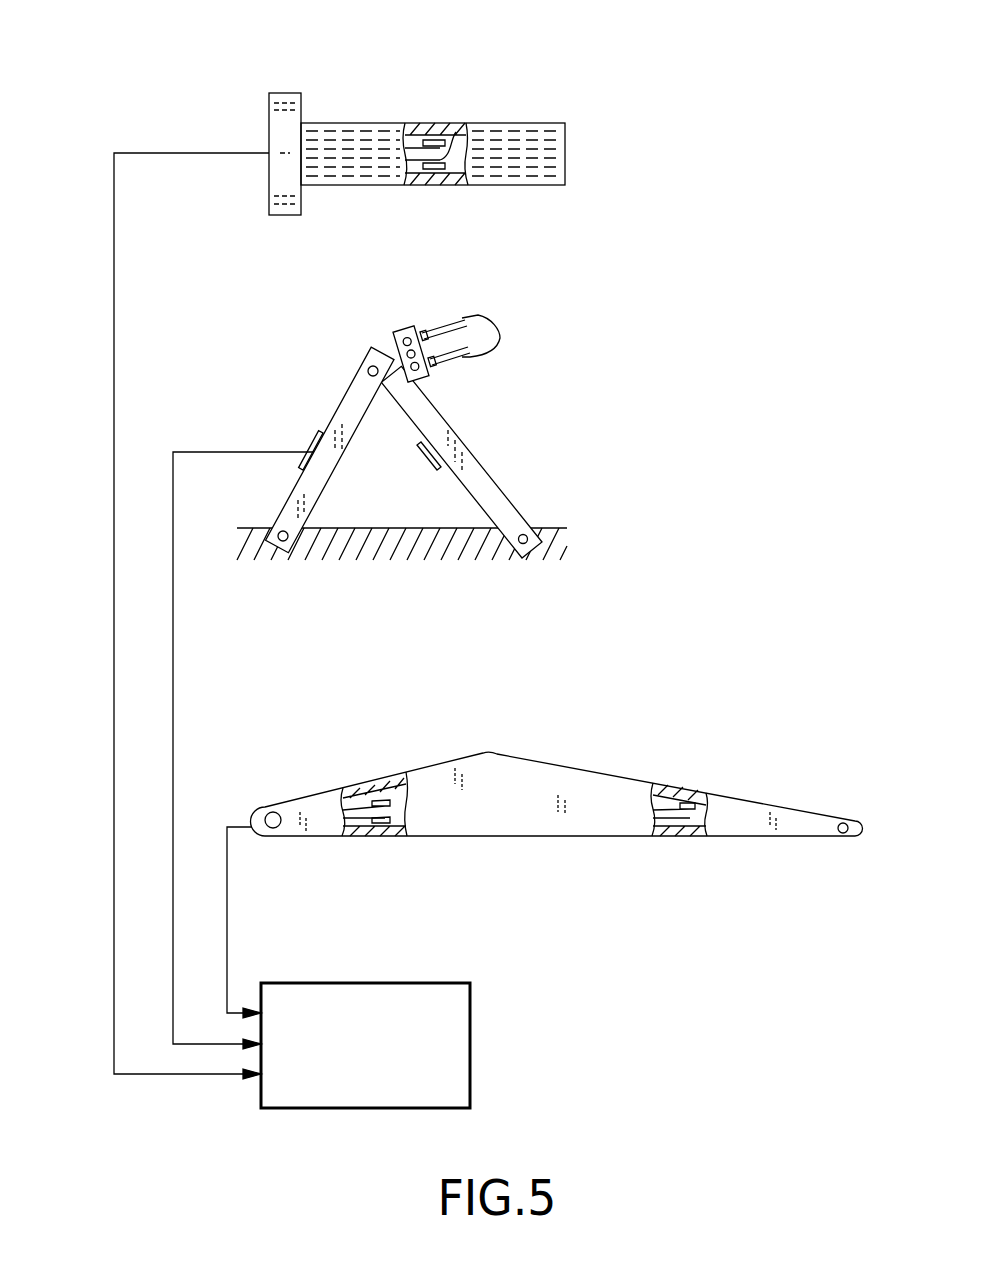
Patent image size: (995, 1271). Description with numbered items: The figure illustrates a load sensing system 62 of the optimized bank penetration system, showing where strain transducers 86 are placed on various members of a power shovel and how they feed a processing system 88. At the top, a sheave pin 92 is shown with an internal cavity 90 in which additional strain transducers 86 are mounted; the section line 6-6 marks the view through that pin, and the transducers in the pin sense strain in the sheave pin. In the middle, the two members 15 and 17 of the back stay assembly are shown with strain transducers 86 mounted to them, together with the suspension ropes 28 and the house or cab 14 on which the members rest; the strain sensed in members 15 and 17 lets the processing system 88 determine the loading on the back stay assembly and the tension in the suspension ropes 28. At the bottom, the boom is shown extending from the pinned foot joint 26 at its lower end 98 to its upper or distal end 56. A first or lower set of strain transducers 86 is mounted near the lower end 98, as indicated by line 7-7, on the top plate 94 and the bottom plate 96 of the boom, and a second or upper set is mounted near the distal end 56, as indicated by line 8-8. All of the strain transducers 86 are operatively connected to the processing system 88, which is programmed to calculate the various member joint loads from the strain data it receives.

The load sensing system 62 is at (100, 84).
The sheave pin 92 is at (285, 93).
The internal cavity 90 is at (472, 151).
The strain transducers 86 is at (456, 160).
The line 6- 6 is at (463, 250).
The house or cab 14 is at (555, 528).
The member of back stay assembly 15 is at (352, 398).
The member of back stay assembly 17 is at (430, 424).
The suspension ropes 28 is at (500, 338).
The pinned foot joint 26 is at (277, 838).
The lower end of boom 98 is at (268, 808).
The upper or distal end of boom 56 is at (818, 838).
The top plate 94 is at (390, 775).
The bottom plate 96 is at (398, 838).
The line 7- 7 is at (397, 897).
The line 8- 8 is at (663, 897).
The processing system 88 is at (472, 1020).